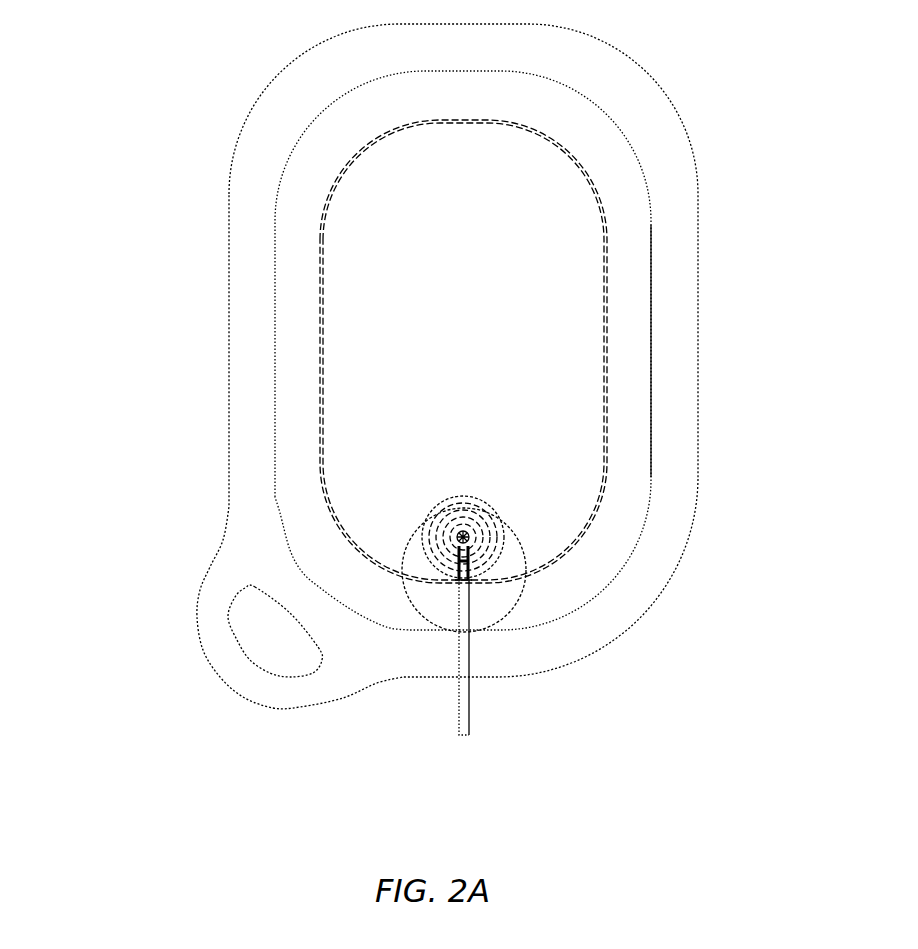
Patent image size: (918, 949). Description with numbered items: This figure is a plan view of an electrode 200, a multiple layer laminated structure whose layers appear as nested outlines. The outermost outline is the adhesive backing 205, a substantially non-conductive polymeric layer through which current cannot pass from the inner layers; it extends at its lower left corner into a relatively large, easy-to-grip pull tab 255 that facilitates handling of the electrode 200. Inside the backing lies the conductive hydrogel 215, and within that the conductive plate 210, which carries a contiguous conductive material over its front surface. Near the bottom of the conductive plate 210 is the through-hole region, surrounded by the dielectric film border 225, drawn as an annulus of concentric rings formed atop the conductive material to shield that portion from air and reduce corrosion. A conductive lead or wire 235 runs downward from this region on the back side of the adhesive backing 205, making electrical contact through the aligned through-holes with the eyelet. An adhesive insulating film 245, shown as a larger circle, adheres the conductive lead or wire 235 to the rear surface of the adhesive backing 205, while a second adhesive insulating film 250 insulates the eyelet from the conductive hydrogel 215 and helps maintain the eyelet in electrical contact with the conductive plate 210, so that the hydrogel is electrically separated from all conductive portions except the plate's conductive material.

The electrode 200 is at (202, 82).
The adhesive backing 205 is at (663, 127).
The conductive plate 210 is at (575, 305).
The conductive hydrogel 215 is at (630, 318).
The dielectric film border 225 is at (493, 533).
The conductive lead or wire 235 is at (463, 693).
The adhesive insulating film 245 is at (498, 602).
The second adhesive insulating film 250 is at (497, 557).
The pull tab 255 is at (268, 627).